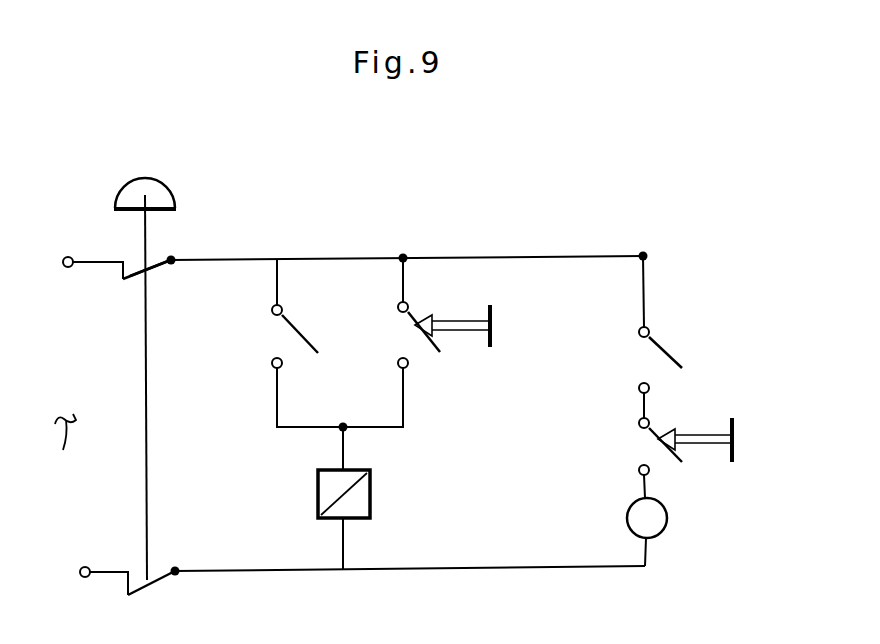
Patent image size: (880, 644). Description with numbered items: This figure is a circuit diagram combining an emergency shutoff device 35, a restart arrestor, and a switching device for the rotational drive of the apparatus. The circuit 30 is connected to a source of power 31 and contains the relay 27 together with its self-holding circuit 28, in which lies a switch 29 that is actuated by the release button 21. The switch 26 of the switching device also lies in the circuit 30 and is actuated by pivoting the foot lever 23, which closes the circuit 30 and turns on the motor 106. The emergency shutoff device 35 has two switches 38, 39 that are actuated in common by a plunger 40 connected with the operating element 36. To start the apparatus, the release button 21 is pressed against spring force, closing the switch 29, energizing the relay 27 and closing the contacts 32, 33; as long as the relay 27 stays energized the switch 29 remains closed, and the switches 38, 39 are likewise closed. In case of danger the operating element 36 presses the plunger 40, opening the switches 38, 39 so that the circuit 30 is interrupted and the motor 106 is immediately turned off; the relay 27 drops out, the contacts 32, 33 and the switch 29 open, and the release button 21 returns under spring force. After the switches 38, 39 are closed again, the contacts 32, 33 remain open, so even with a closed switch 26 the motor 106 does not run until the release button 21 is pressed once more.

The operating element 36 is at (155, 193).
The emergency shutoff device 35 is at (158, 248).
The switch 38 is at (152, 272).
The switch 39 is at (162, 582).
The plunger 40 is at (148, 377).
The source of power 31 is at (62, 448).
The contact 32 is at (302, 336).
The release button 21 is at (453, 321).
The switch 29 is at (417, 353).
The self-holding circuit 28 is at (404, 405).
The relay 27 is at (362, 500).
The circuit 30 is at (480, 570).
The contact 33 is at (665, 350).
The foot lever 23 is at (700, 433).
The switch 26 is at (653, 458).
The motor 106 is at (662, 522).